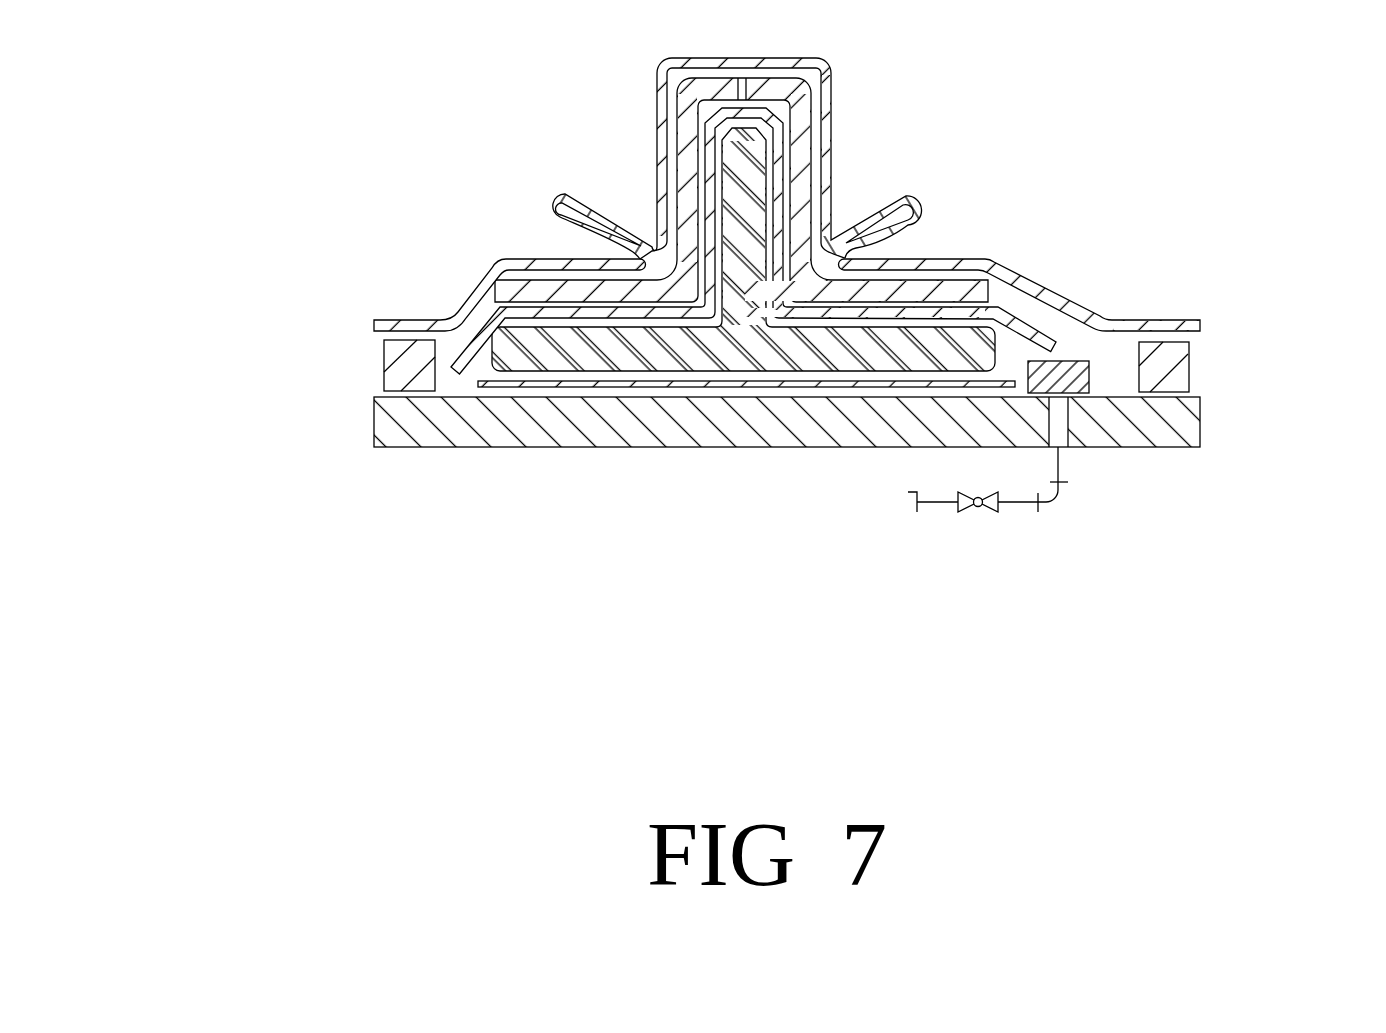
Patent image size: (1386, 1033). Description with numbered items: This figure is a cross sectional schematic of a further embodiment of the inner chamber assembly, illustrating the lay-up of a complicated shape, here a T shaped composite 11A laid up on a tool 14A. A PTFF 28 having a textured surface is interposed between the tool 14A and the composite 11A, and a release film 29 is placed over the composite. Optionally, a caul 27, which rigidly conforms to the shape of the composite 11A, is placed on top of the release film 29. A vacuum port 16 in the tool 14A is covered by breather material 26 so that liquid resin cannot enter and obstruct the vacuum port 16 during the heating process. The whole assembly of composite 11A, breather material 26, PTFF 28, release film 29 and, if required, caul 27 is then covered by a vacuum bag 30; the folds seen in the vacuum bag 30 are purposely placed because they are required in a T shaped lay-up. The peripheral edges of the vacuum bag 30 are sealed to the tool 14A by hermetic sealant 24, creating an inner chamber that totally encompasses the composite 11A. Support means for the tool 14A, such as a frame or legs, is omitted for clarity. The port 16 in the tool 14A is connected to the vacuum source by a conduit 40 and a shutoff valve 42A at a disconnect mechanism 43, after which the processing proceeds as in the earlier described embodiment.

The T shaped composite 11A is at (752, 345).
The tool 14A is at (1190, 422).
The vacuum port 16 is at (1067, 450).
The hermetic sealant 24 is at (396, 350).
The breather material 26 is at (1078, 365).
The caul 27 is at (798, 150).
The PTFF 28 is at (538, 387).
The release film 29 is at (487, 322).
The vacuum bag 30 is at (540, 264).
The conduit 40 is at (1052, 497).
The shutoff valve 42A is at (1000, 513).
The disconnect mechanism 43 is at (911, 508).